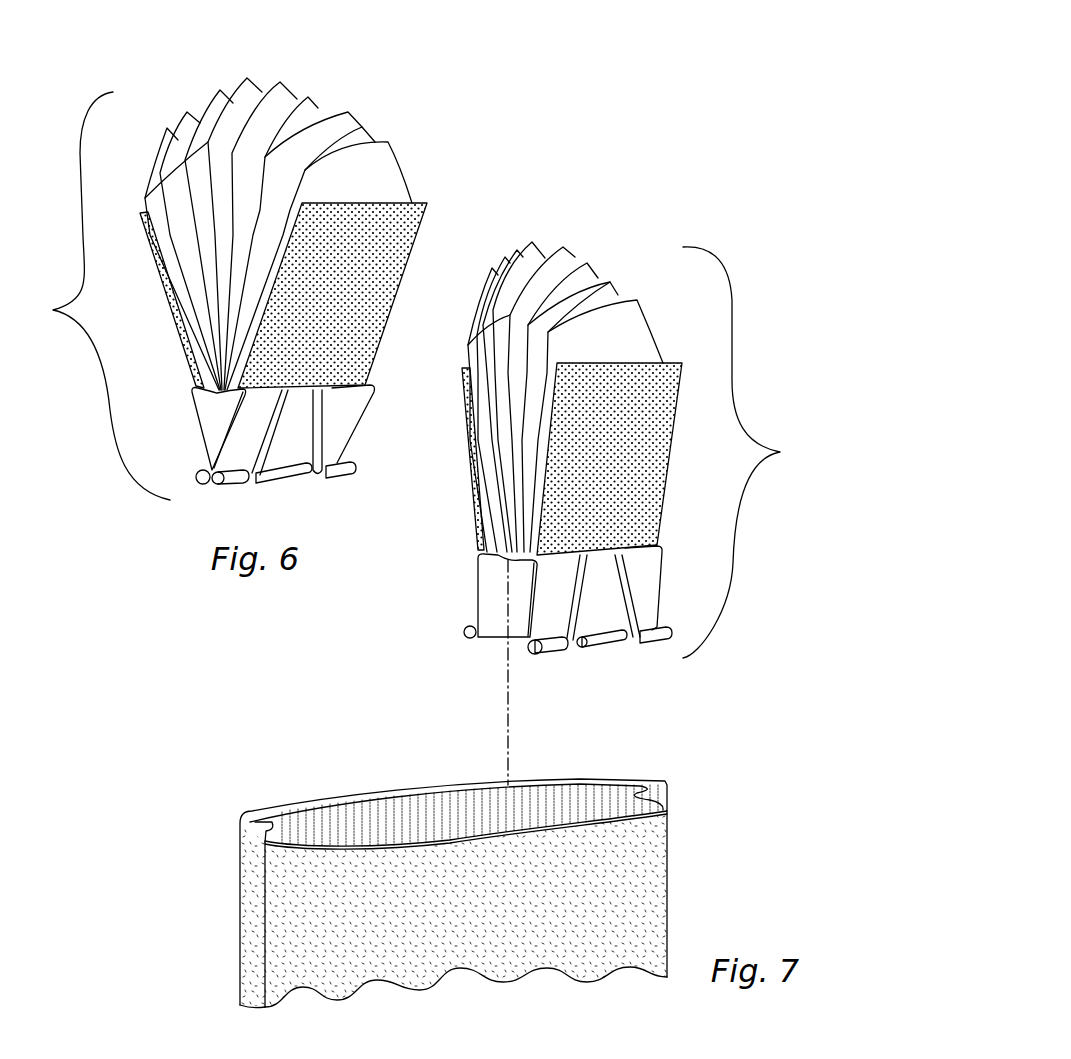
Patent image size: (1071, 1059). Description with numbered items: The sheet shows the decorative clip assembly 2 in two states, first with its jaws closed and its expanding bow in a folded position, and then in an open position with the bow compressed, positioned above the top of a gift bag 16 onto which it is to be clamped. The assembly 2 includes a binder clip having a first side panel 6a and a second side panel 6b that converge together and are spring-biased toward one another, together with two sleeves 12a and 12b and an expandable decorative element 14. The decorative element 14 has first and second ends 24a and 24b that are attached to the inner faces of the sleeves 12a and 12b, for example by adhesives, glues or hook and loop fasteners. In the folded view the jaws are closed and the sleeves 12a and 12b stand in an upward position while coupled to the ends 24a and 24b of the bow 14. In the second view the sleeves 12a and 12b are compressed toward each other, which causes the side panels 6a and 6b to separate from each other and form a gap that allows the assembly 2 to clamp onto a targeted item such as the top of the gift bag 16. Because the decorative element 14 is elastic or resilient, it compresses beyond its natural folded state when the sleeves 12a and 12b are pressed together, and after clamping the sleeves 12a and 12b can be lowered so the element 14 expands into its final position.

In FIG. 6, the decorative clip assembly 2 is at (101, 296).
In FIG. 7, the decorative clip assembly 2 is at (740, 452).
In FIG. 6, the decorative element 14 is at (250, 85).
In FIG. 7, the decorative element 14 is at (568, 255).
In FIG. 6, the first end 24a is at (395, 190).
In FIG. 7, the first end 24a is at (640, 353).
In FIG. 6, the second end 24b is at (173, 263).
In FIG. 7, the second end 24b is at (488, 473).
In FIG. 6, the first sleeve 12a is at (358, 348).
In FIG. 7, the first sleeve 12a is at (653, 507).
In FIG. 6, the second sleeve 12b is at (173, 327).
In FIG. 7, the second sleeve 12b is at (475, 518).
In FIG. 6, the first side panel 6a is at (340, 432).
In FIG. 7, the first side panel 6a is at (653, 585).
In FIG. 6, the second side panel 6b is at (203, 430).
In FIG. 7, the second side panel 6b is at (475, 605).
In FIG. 7, the gift bag 16 is at (670, 877).